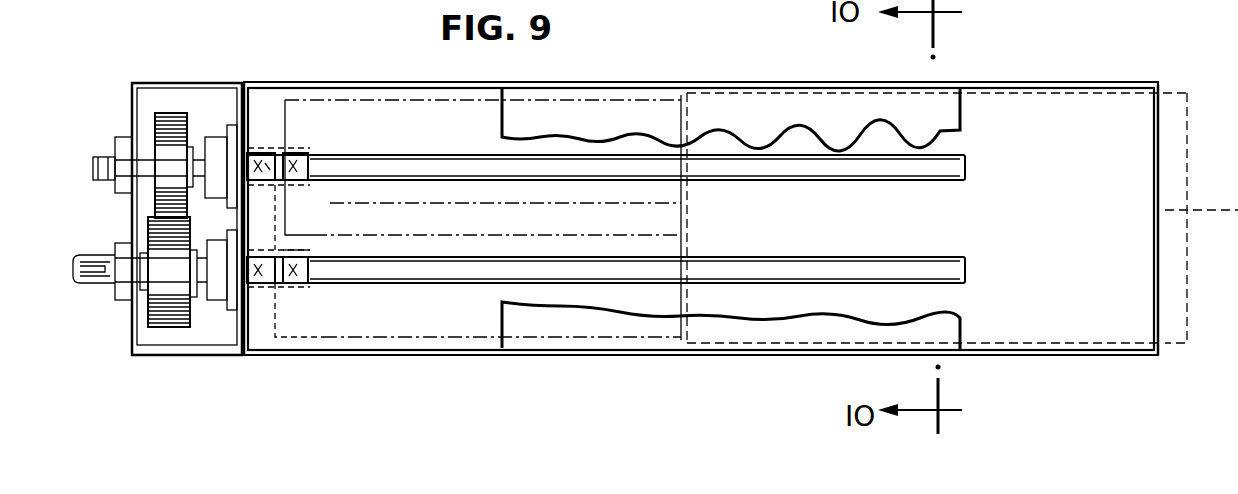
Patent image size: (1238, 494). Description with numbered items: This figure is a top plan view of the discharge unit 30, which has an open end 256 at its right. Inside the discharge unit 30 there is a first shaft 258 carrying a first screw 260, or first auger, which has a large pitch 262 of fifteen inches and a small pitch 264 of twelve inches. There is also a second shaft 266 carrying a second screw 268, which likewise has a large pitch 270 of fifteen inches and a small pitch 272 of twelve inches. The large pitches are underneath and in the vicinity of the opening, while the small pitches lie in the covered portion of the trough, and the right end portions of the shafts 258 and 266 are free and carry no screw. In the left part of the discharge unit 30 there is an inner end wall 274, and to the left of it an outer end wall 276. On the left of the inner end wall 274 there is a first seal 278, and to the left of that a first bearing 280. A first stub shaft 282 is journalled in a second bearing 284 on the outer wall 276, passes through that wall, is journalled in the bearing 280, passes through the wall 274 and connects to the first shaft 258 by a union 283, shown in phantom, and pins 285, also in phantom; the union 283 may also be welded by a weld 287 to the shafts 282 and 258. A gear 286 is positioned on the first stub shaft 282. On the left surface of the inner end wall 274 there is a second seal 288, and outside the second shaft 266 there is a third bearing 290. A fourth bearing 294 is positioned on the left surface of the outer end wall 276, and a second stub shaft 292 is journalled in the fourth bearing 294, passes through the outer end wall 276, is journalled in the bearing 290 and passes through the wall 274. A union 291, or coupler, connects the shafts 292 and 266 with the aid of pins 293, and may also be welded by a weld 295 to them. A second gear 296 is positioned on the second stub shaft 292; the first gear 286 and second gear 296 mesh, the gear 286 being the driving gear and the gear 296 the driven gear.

The discharge unit 30 is at (1074, 78).
The open end 256 is at (1158, 152).
The first shaft 258 is at (497, 270).
The first screw 260 is at (340, 349).
The large pitch 262 is at (395, 318).
The small pitch 264 is at (558, 322).
The second shaft 266 is at (400, 133).
The second screw 268 is at (345, 112).
The large pitch 270 is at (453, 133).
The small pitch 272 is at (572, 120).
The inner end wall 274 is at (242, 335).
The outer end wall 276 is at (132, 110).
The first seal 278 is at (177, 385).
The first bearing 280 is at (193, 320).
The first stub shaft 282 is at (105, 242).
The union 283 is at (278, 295).
The second bearing 284 is at (122, 242).
The pins 285 is at (305, 258).
The gear 286 is at (163, 285).
The weld 287 is at (310, 270).
The second seal 288 is at (233, 127).
The third bearing 290 is at (212, 147).
The union 291 is at (283, 182).
The second stub shaft 292 is at (102, 157).
The pins 293 is at (265, 142).
The fourth bearing 294 is at (122, 137).
The weld 295 is at (306, 148).
The second gear 296 is at (167, 115).